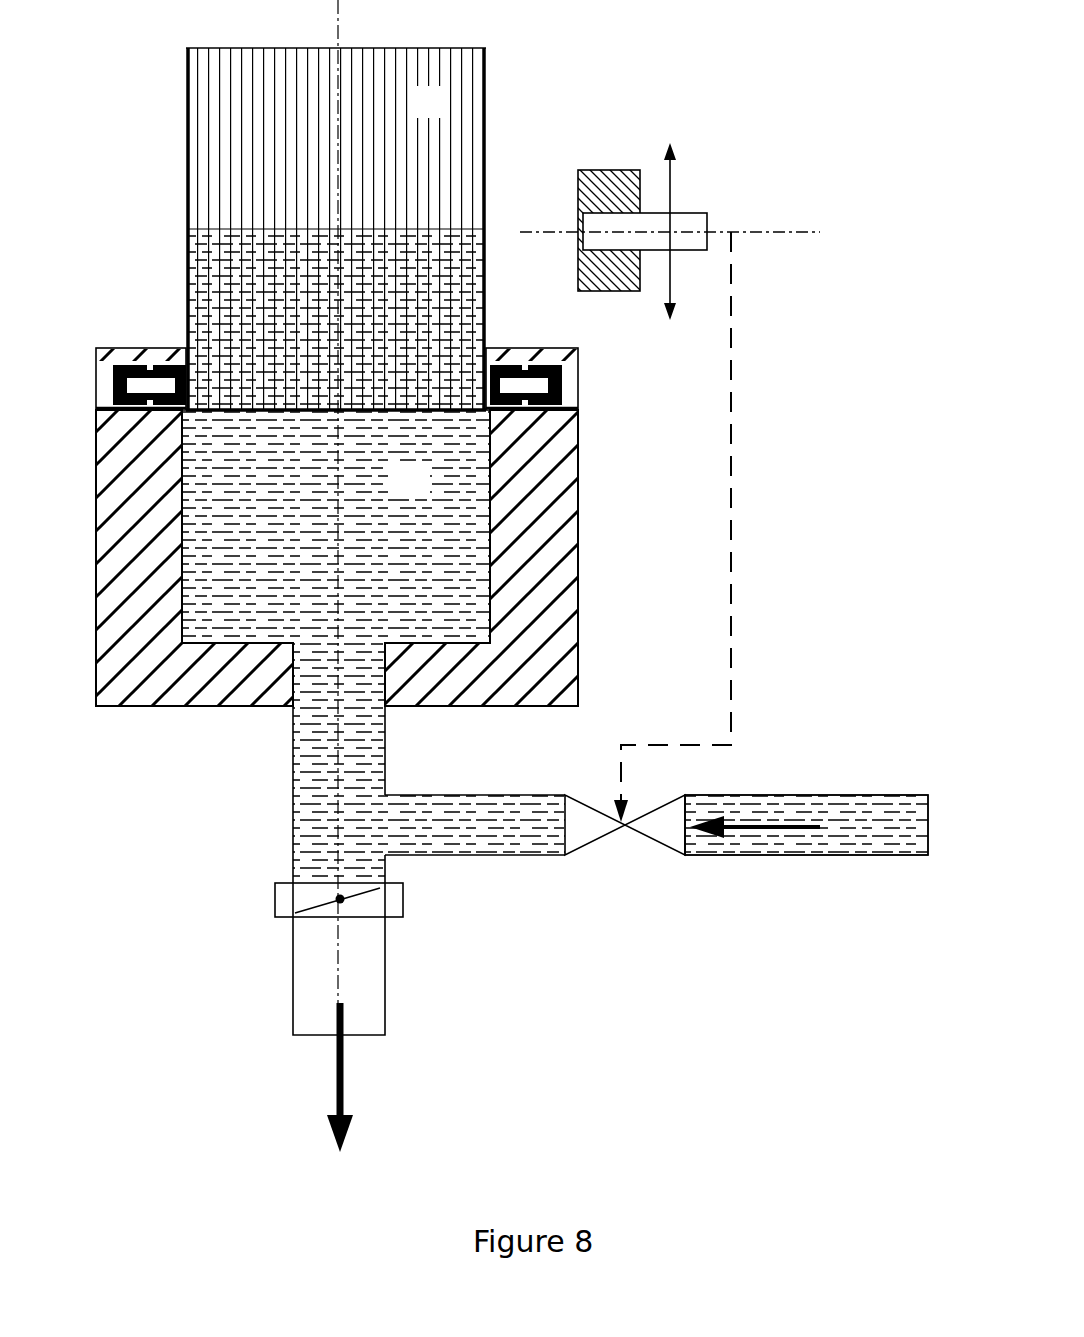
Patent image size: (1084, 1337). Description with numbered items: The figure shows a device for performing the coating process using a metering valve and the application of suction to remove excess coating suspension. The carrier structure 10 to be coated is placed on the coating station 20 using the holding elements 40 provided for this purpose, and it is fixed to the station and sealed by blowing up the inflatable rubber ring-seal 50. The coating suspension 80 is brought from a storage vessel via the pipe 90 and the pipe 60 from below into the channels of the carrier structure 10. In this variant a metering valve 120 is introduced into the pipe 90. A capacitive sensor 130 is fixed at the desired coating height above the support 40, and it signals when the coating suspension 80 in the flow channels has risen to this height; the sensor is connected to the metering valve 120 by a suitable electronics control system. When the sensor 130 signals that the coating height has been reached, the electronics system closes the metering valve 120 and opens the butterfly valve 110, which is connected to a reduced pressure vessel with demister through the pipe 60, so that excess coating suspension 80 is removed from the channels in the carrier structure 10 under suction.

The carrier structure 10 is at (336, 229).
The coating station 20 is at (578, 596).
The holding elements 40 is at (518, 416).
The inflatable rubber ring-seal 50 is at (560, 378).
The pipe 60 is at (290, 773).
The coating suspension 80 is at (555, 556).
The pipe 90 is at (488, 857).
The butterfly valve 110 is at (385, 922).
The metering valve 120 is at (588, 835).
The capacitive sensor 130 is at (690, 222).